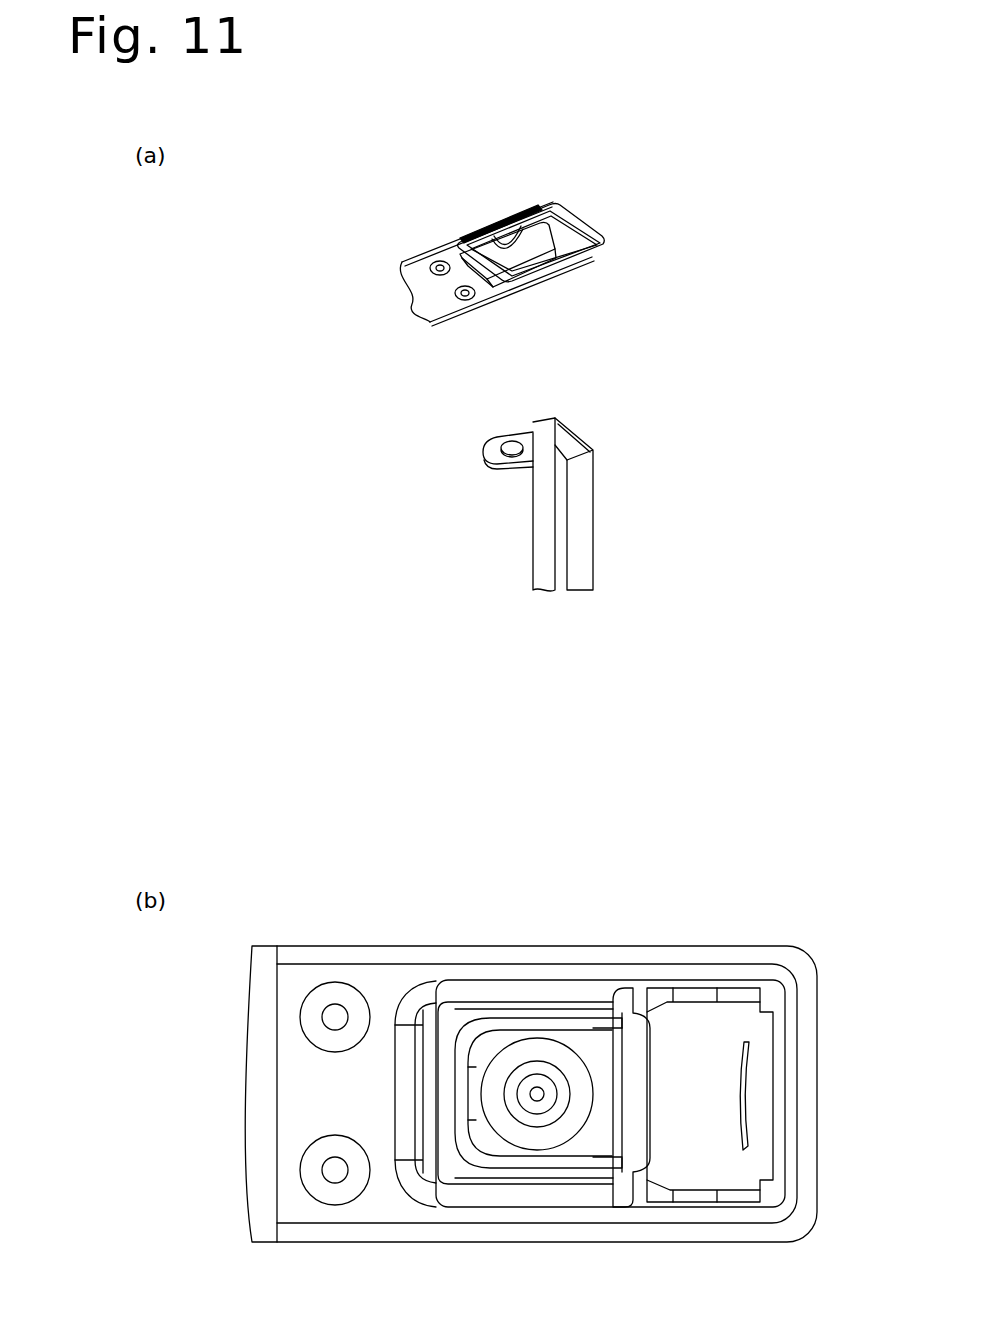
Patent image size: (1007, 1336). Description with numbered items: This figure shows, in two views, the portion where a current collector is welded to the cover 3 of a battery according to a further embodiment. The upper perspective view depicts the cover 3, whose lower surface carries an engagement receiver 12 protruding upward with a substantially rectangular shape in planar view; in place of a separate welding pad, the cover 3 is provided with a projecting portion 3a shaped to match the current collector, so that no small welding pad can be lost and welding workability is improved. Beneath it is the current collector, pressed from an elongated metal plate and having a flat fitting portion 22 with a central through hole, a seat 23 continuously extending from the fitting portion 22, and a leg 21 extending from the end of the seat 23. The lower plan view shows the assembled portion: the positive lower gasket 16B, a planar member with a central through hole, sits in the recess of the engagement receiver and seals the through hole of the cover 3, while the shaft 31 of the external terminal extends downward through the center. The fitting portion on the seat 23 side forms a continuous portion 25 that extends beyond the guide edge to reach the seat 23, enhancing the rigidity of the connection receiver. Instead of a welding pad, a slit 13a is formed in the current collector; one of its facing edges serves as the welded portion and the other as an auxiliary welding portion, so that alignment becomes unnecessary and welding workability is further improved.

The cover 3 is at (420, 252).
The projecting portion 3a is at (603, 235).
The engagement receiver 12 is at (491, 214).
The leg 21 is at (596, 522).
The fitting portion 22 is at (492, 437).
The seat 23 is at (573, 452).
The continuous portion 25 is at (638, 1162).
The shaft 31 is at (518, 1073).
The positive lower gasket 16B is at (632, 1020).
The slit 13a is at (736, 1150).